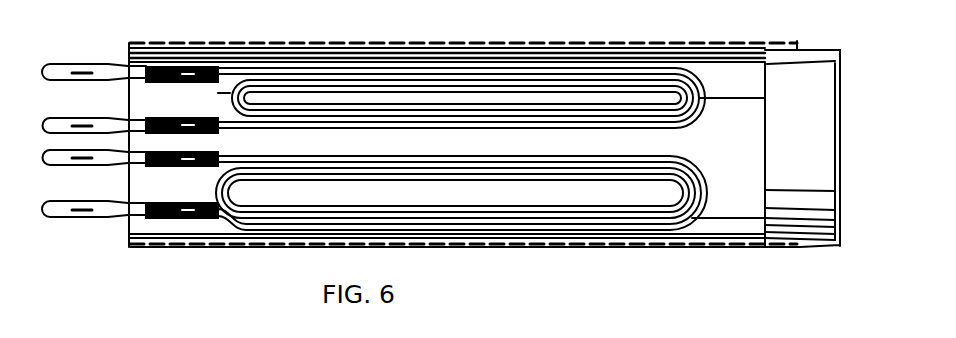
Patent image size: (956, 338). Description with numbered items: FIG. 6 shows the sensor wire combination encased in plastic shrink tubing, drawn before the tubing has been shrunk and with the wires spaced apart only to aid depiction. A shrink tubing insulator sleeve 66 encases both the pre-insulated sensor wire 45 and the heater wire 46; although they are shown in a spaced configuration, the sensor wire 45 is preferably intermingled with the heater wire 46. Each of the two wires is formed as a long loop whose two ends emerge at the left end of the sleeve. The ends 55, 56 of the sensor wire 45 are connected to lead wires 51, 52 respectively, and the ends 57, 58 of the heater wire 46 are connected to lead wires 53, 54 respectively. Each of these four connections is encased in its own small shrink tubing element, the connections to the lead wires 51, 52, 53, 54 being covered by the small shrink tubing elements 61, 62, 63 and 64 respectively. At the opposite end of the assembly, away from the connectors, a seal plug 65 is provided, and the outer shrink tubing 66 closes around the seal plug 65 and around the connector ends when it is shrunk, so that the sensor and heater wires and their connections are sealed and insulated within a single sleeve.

The pre-insulated sensor wire 45 is at (700, 125).
The heater wire 46 is at (625, 158).
The lead wire 51 is at (92, 64).
The lead wire 52 is at (88, 118).
The lead wire 53 is at (93, 165).
The lead wire 54 is at (95, 218).
The sensor wire end 55 is at (247, 70).
The sensor wire end 56 is at (236, 126).
The heater wire end 57 is at (268, 160).
The heater wire end 58 is at (262, 207).
The small shrink tubing element 61 is at (208, 66).
The small shrink tubing element 62 is at (150, 120).
The small shrink tubing element 63 is at (190, 166).
The small shrink tubing element 64 is at (175, 220).
The seal plug 65 is at (812, 60).
The shrink tubing insulator sleeve 66 is at (528, 44).